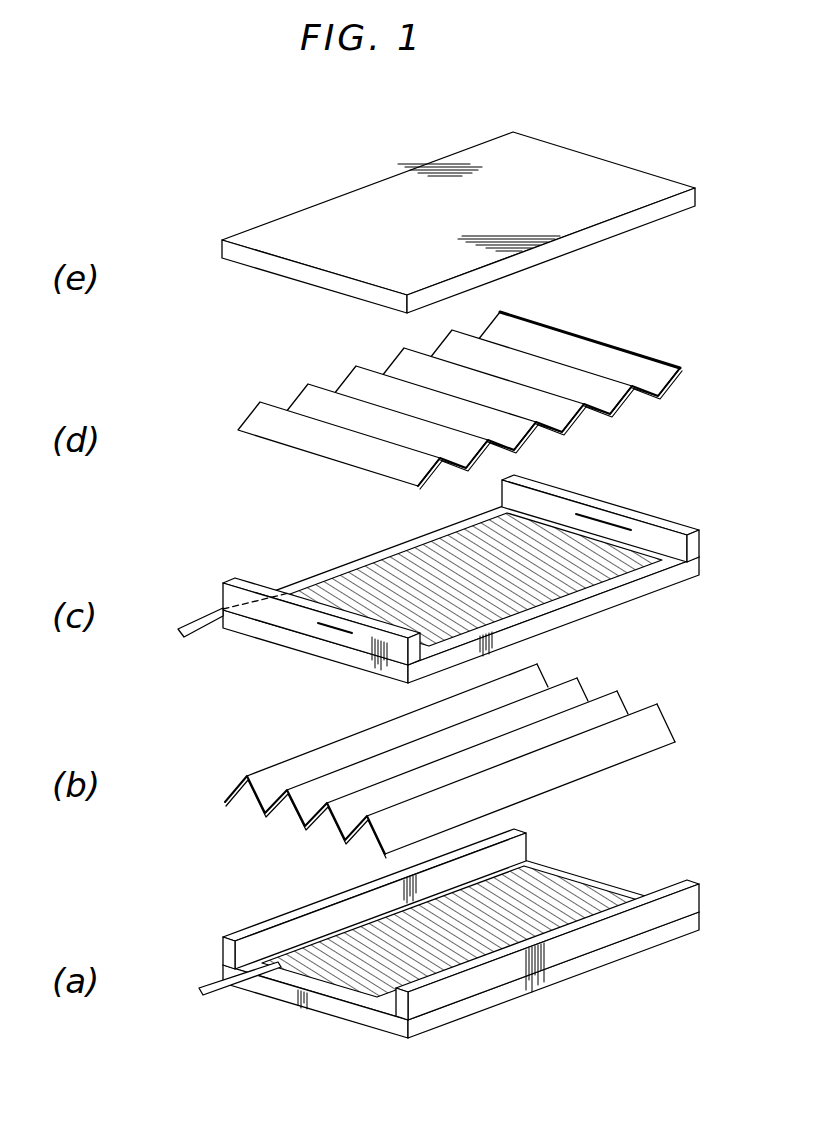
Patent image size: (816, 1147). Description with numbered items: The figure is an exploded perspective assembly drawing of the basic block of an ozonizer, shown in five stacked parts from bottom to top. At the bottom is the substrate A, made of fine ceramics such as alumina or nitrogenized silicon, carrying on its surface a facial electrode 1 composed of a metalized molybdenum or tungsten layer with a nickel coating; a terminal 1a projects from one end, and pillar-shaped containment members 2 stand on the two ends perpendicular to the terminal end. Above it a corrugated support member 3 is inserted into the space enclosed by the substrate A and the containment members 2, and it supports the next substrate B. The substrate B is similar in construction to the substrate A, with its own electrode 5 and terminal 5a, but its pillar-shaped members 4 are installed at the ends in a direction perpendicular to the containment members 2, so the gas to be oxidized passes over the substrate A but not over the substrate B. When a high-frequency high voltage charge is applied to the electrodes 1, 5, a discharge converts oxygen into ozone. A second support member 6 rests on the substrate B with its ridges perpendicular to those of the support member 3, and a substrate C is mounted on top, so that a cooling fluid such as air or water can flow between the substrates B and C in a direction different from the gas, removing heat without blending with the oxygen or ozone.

The substrate C is at (260, 236).
The support member 6 is at (617, 356).
The substrate B is at (451, 592).
The electrode 5 is at (332, 567).
The terminal 5a is at (203, 628).
The pillar-shaped members 4 is at (248, 585).
The corrugated support member 3 is at (617, 707).
The substrate A is at (456, 934).
The facial electrode 1 is at (583, 893).
The terminal 1a is at (218, 993).
The pillar-shaped containment members 2 is at (513, 848).